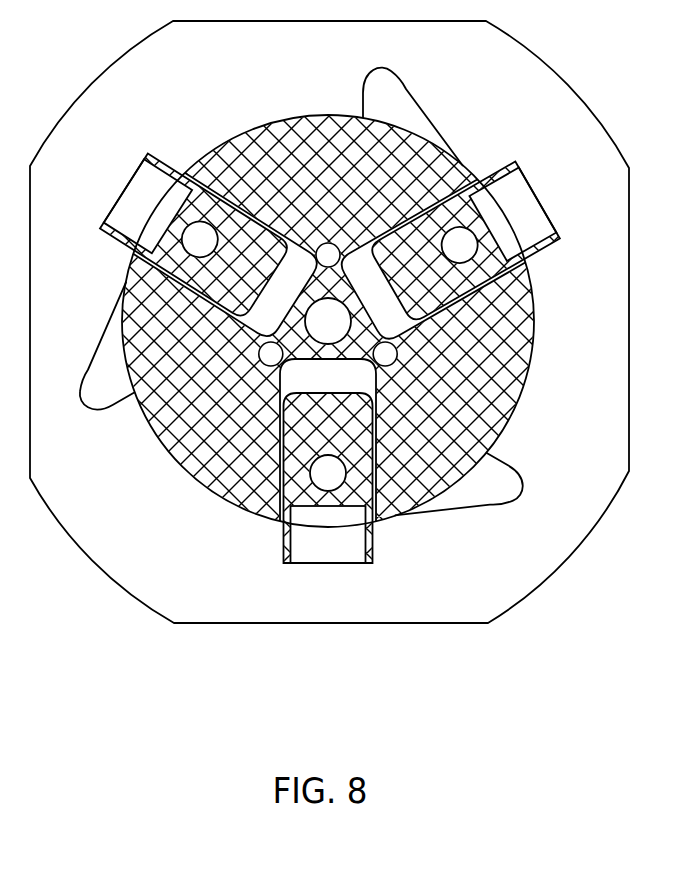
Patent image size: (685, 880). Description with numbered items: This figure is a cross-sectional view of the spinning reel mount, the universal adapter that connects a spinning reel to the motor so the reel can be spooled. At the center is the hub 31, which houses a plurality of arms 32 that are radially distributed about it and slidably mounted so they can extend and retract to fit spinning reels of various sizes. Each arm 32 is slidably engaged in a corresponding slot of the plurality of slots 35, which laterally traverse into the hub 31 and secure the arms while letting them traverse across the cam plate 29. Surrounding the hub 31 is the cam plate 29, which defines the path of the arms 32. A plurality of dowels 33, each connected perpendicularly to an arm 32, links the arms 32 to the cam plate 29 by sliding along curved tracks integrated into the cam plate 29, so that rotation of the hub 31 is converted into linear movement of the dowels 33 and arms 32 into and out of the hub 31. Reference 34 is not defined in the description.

The cam plate 29 is at (591, 513).
The hub 31 is at (530, 343).
The arms 32 is at (110, 237).
The dowels 33 is at (181, 208).
The spring finger 34 is at (404, 97).
The slots 35 is at (280, 281).